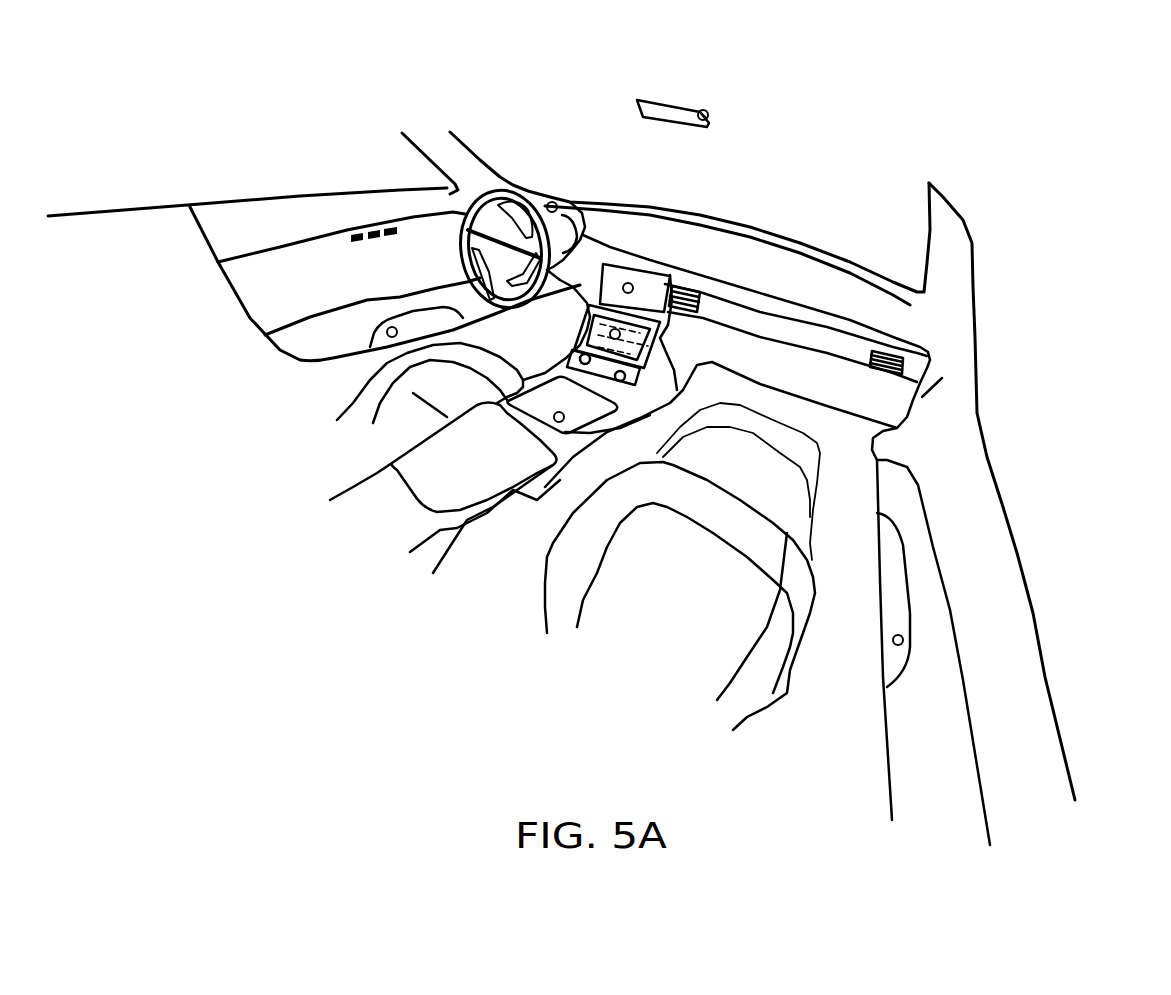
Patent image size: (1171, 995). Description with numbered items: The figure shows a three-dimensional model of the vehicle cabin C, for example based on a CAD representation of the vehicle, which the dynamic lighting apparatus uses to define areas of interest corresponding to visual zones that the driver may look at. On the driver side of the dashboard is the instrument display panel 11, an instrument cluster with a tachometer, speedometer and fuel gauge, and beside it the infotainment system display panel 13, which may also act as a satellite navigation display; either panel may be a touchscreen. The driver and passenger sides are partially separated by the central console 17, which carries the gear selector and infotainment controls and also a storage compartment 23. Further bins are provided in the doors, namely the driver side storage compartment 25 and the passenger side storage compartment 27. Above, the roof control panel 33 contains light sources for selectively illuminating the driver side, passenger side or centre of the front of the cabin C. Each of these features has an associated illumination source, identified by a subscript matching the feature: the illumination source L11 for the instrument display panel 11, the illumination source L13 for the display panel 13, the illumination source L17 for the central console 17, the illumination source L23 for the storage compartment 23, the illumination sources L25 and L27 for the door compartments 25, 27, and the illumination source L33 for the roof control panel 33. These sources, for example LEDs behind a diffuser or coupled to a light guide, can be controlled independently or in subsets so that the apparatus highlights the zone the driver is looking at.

The instrument display panel 11 is at (527, 197).
The illumination source L11 is at (553, 202).
The infotainment system display panel 13 is at (618, 270).
The illumination source L13 is at (633, 284).
The central console 17 is at (640, 347).
The illumination source L17 is at (620, 332).
The storage compartment 23 is at (602, 400).
The illumination source L23 is at (562, 423).
The driver side storage compartment 25 is at (405, 308).
The illumination source L25 is at (390, 327).
The passenger side storage compartment 27 is at (892, 582).
The illumination source L27 is at (904, 637).
The roof control panel 33 is at (667, 110).
The illumination source L33 is at (708, 111).
The cabin C is at (1005, 343).